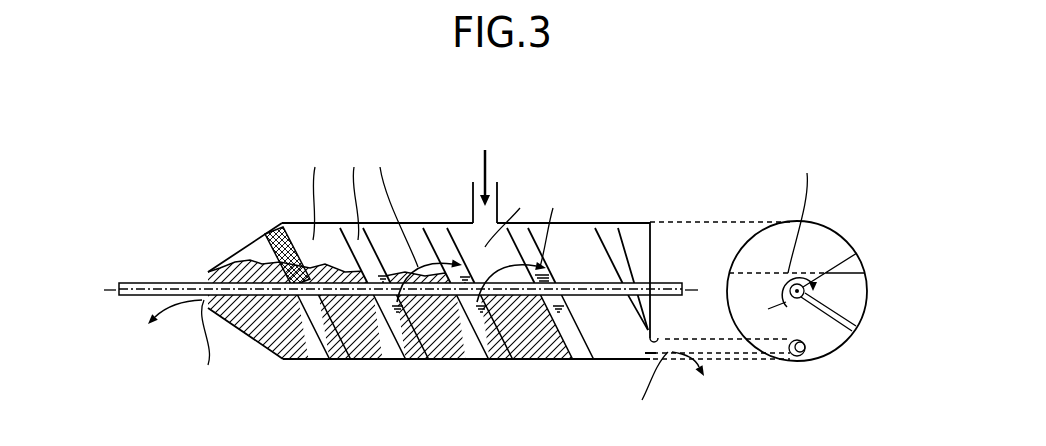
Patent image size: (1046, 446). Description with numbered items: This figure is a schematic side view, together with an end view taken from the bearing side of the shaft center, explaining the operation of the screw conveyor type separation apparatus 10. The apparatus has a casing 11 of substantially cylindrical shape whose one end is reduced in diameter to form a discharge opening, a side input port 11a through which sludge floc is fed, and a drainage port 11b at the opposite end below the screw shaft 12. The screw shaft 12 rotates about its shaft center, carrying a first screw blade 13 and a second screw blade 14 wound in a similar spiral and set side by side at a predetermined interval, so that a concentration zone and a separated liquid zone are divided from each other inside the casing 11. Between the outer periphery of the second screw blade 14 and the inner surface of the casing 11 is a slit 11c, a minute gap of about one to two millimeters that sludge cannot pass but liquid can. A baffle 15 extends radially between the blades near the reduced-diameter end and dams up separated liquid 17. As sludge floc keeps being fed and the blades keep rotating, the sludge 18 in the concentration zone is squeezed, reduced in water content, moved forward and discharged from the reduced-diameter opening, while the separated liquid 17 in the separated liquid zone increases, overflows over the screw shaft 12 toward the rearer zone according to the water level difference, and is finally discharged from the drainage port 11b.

The screw conveyor type separation apparatus 10 is at (244, 167).
The casing 11 is at (338, 221).
The input port 11a is at (498, 192).
The drainage port 11b is at (655, 340).
The slit 11c is at (488, 356).
The screw shaft 12 is at (128, 283).
The first screw blade 13 is at (545, 295).
The second screw blade 14 is at (281, 237).
The baffle 15 is at (272, 229).
The separated liquid 17 is at (413, 344).
The sludge 18 is at (367, 344).